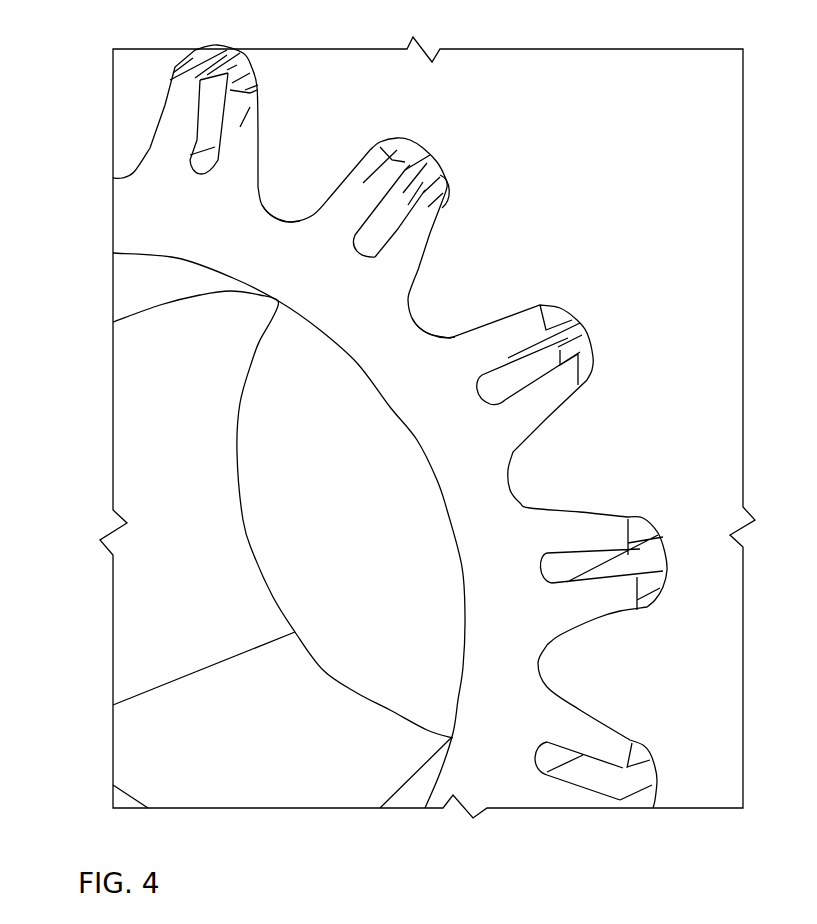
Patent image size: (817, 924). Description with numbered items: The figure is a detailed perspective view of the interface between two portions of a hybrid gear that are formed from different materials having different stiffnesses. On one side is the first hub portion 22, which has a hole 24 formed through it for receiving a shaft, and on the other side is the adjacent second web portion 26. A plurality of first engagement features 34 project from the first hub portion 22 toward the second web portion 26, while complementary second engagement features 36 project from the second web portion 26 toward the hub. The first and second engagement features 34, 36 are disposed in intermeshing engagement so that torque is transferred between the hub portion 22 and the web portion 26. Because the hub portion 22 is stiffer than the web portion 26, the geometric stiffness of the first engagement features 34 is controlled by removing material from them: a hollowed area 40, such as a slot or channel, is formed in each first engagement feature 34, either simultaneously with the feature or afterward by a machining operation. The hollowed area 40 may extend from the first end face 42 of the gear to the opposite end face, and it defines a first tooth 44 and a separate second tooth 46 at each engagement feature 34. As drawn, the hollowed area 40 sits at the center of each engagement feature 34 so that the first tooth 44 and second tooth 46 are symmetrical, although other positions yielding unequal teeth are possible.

The first hub portion 22 is at (135, 197).
The hole 24 is at (165, 403).
The second web portion 26 is at (635, 115).
The first engagement feature 34 is at (166, 46).
The second engagement feature 36 is at (293, 185).
The hollowed area 40 is at (213, 107).
The first end face 42 is at (487, 503).
The first tooth 44 is at (170, 104).
The second tooth 46 is at (262, 88).